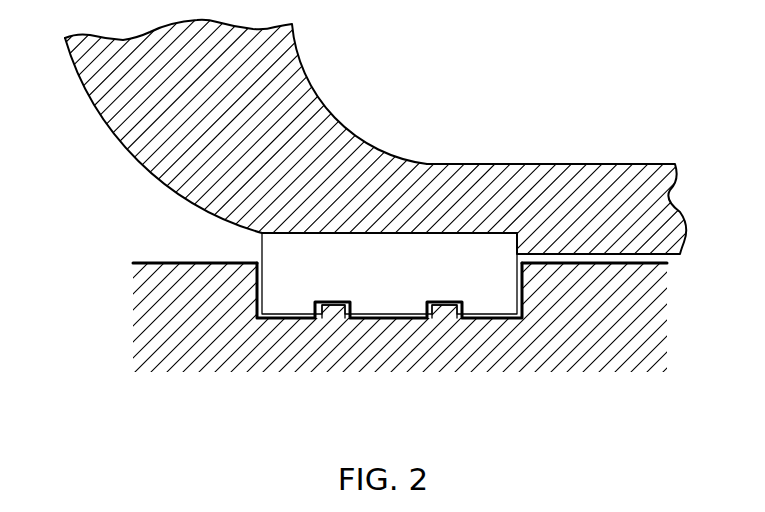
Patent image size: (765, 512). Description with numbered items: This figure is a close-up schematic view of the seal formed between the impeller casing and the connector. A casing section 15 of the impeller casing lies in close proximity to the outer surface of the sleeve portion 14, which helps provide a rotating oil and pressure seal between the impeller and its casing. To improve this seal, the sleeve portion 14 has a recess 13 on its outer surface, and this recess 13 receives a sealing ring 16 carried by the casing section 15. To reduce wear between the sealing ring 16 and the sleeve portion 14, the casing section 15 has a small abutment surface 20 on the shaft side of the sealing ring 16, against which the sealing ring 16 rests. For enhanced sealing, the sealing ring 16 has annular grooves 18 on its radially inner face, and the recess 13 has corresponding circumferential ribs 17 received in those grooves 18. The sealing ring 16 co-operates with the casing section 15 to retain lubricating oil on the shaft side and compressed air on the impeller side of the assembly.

The recess 13 is at (258, 293).
The sleeve portion 14 is at (608, 342).
The casing section 15 is at (135, 102).
The sealing ring 16 is at (345, 255).
The circumferential ribs 17 is at (333, 310).
The annular grooves 18 is at (452, 300).
The abutment surface 20 is at (521, 243).